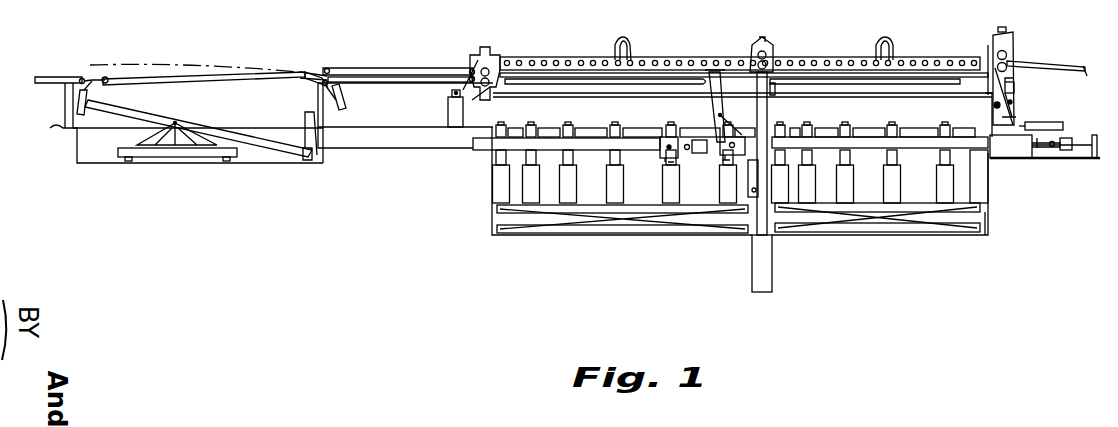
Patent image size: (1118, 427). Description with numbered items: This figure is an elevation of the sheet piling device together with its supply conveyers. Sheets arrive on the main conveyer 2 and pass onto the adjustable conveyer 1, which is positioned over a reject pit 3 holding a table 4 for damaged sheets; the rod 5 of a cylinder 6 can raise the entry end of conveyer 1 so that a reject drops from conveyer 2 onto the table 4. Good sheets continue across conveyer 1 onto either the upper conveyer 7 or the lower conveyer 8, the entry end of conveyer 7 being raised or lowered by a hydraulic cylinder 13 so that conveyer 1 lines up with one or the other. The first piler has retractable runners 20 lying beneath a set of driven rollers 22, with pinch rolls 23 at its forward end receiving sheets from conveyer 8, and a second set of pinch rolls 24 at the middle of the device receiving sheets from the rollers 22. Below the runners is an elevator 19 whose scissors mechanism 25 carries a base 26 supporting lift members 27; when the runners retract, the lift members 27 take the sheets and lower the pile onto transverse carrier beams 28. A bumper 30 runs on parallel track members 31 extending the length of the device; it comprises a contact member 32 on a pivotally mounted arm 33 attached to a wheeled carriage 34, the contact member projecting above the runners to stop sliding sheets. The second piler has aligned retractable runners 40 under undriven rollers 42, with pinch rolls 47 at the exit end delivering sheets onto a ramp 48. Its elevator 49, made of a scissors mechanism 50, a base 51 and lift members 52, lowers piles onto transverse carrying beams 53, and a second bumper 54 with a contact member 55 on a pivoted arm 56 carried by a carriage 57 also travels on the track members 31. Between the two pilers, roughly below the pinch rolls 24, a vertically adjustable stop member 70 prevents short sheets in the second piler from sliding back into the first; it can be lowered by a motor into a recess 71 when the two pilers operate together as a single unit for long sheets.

The adjustable conveyer 1 is at (256, 74).
The main conveyer 2 is at (45, 76).
The reject pit 3 is at (80, 163).
The table 4 is at (268, 150).
The rod 5 is at (70, 95).
The cylinder 6 is at (90, 94).
The upper conveyer 7 is at (372, 66).
The lower conveyer 8 is at (410, 84).
The hydraulic cylinder 13 is at (347, 100).
The elevator 19 is at (493, 236).
The retractable runner 20 is at (568, 60).
The driven rollers 22 is at (620, 40).
The pinch rolls 23 is at (478, 55).
The second set of pinch rolls 24 is at (752, 48).
The scissors mechanism 25 is at (625, 233).
The base 26 is at (497, 208).
The lift members 27 is at (495, 177).
The transverse carrier beams 28 is at (613, 124).
The bumper 30 is at (778, 92).
The track members 31 is at (640, 150).
The contact member 32 is at (695, 72).
The pivotally mounted arm 33 is at (708, 102).
The carriage 34 is at (697, 157).
The retractable runner 40 is at (948, 62).
The rollers 42 is at (888, 40).
The pinch rolls 47 is at (1010, 45).
The ramp 48 is at (1062, 66).
The elevator 49 is at (828, 232).
The scissors mechanism 50 is at (876, 232).
The base 51 is at (978, 232).
The lift members 52 is at (967, 180).
The transverse carrying beams 53 is at (890, 124).
The bumper 54 is at (1015, 98).
The contact member 55 is at (982, 50).
The pivoted arm 56 is at (1040, 123).
The carriage 57 is at (1018, 153).
The vertically adjustable stop member 70 is at (775, 80).
The recess 71 is at (752, 278).